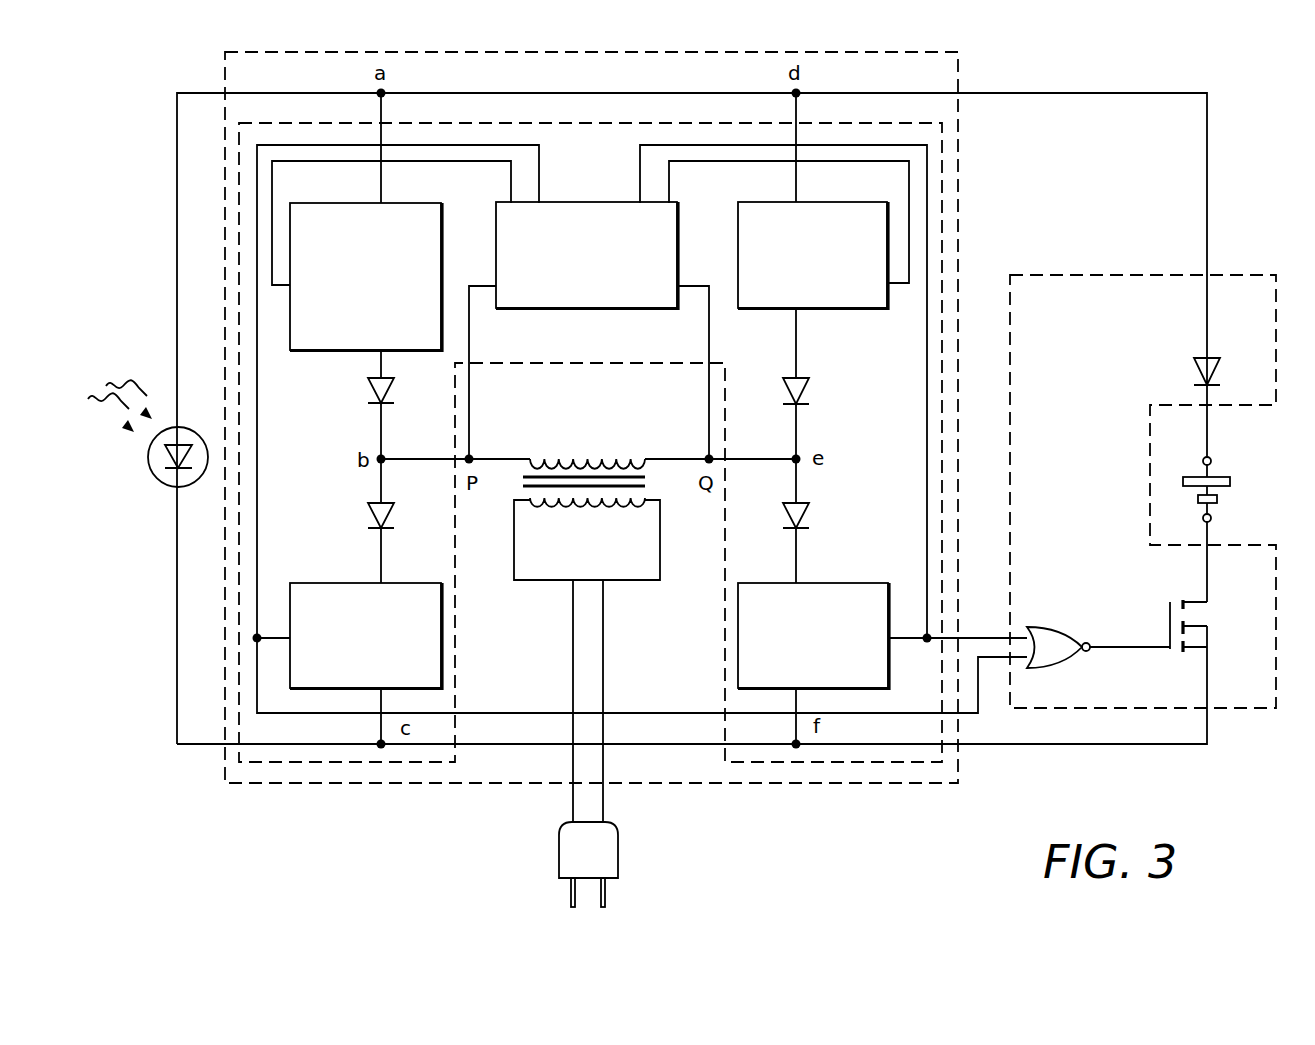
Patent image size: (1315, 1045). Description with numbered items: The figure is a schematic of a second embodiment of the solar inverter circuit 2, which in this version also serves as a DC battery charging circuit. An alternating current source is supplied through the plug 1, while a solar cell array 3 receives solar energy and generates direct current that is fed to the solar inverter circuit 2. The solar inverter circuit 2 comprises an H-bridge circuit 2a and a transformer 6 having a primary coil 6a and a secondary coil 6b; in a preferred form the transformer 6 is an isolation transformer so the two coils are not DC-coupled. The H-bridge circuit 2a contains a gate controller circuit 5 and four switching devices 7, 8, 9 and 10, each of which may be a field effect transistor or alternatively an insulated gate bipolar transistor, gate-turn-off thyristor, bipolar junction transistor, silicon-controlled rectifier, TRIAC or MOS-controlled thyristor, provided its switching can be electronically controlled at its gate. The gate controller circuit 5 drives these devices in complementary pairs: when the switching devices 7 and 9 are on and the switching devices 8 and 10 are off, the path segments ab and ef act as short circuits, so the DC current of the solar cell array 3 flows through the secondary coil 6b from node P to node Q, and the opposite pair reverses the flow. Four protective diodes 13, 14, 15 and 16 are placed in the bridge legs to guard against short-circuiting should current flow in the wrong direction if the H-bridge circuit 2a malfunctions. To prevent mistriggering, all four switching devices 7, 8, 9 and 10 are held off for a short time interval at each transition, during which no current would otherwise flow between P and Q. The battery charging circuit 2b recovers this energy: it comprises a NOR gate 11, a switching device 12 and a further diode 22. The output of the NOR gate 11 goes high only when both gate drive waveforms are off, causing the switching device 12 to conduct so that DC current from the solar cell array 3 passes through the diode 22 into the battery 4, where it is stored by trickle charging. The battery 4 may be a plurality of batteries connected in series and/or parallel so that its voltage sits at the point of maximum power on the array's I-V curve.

The plug 1 is at (559, 853).
The solar inverter circuit 2 is at (405, 785).
The H-bridge circuit 2a is at (835, 763).
The battery charging circuit 2b is at (1247, 710).
The solar cell array 3 is at (152, 474).
The battery 4 is at (1220, 476).
The gate controller circuit 5 is at (568, 201).
The transformer 6 is at (626, 450).
The primary coil 6a is at (592, 507).
The secondary coil 6b is at (577, 452).
The switching device 7 is at (410, 203).
The switching device 8 is at (402, 583).
The switching device 9 is at (840, 583).
The switching device 10 is at (826, 202).
The NOR gate 11 is at (1047, 633).
The switching device 12 is at (1194, 597).
The diode D1 13 is at (377, 378).
The diode D2 14 is at (377, 503).
The diode D3 15 is at (805, 505).
The diode D4 16 is at (804, 381).
The diode D5 22 is at (1194, 372).